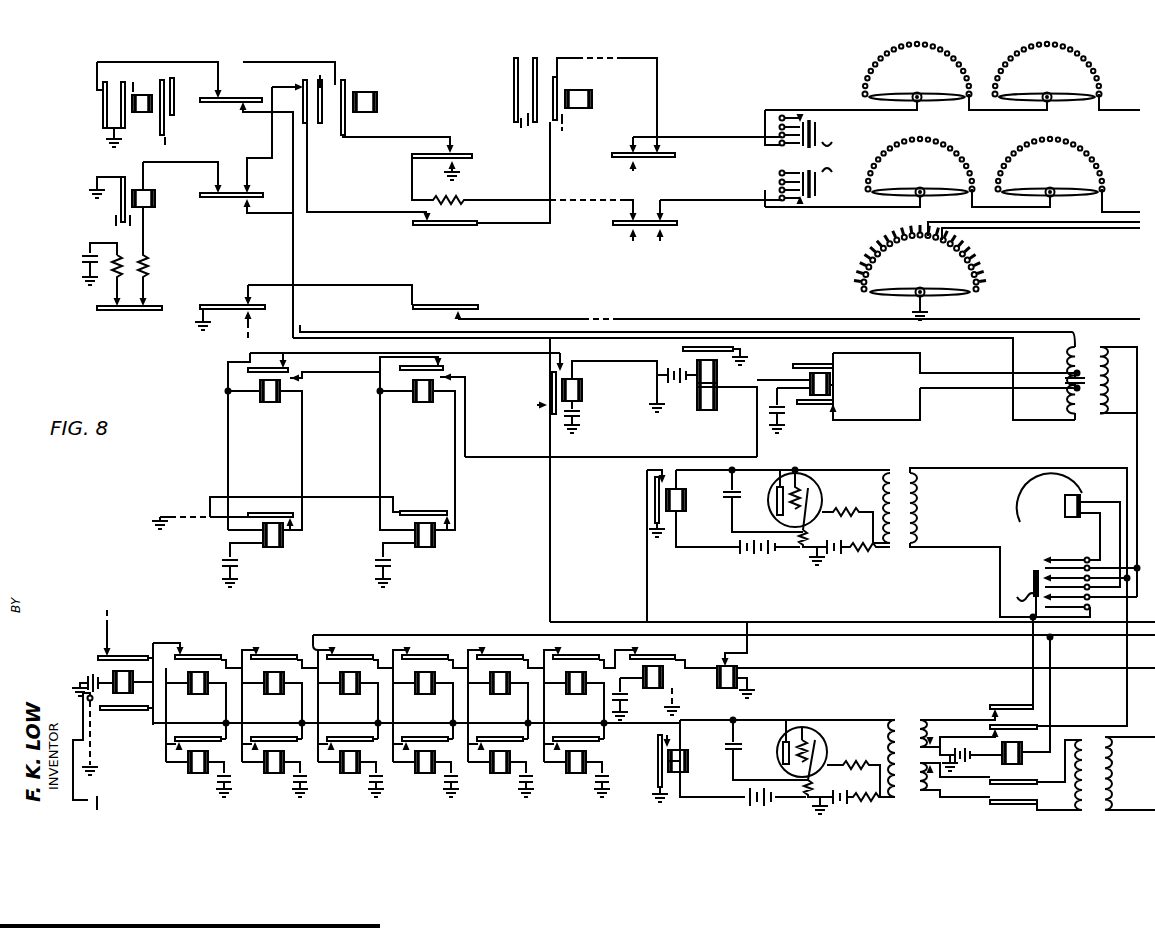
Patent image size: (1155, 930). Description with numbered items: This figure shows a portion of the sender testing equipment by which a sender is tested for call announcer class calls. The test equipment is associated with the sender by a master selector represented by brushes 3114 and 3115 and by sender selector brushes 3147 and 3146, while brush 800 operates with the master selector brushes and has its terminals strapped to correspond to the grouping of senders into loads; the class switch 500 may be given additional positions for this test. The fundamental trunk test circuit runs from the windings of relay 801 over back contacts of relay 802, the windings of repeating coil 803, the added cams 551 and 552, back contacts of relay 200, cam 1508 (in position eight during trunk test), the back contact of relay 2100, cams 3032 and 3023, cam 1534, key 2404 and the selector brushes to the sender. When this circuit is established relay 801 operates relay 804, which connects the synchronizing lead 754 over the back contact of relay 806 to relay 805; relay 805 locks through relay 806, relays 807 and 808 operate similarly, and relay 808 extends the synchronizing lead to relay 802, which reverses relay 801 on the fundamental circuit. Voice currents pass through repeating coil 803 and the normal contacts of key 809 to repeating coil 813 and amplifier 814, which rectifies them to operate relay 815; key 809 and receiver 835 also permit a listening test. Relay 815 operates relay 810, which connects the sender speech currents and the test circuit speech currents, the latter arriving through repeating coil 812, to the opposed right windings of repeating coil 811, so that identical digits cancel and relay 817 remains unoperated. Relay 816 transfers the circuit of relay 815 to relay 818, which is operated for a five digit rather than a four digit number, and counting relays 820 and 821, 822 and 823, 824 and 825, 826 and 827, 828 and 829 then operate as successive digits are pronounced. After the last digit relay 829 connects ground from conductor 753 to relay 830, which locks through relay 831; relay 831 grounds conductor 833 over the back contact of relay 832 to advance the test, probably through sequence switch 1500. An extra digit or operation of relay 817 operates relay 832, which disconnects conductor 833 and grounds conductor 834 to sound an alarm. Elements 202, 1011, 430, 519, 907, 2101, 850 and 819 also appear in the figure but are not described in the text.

The conductor 202 is at (190, 62).
The relay 1011 is at (139, 95).
The relay 200 is at (365, 97).
The cam 552 is at (235, 104).
The cam 551 is at (235, 203).
The relay 430 is at (142, 208).
The contact 519 is at (148, 303).
The class switch 500 is at (230, 312).
The cam 1534 is at (433, 157).
The resistor 907 is at (460, 204).
The cam 1508 is at (438, 226).
The sequence switch 1500 is at (432, 304).
The conductor 2101 is at (548, 174).
The relay 2100 is at (592, 99).
The cam 3032 is at (676, 158).
The cam 3023 is at (680, 228).
The key 2404 is at (798, 158).
The master selector brush 3114 is at (868, 76).
The sender selector brush 3147 is at (1054, 76).
The master selector brush 3115 is at (870, 172).
The sender selector brush 3146 is at (1056, 174).
The brush 800 is at (997, 271).
The relay 806 is at (272, 388).
The relay 805 is at (266, 549).
The relay 808 is at (425, 388).
The relay 807 is at (425, 549).
The relay group 850 is at (496, 576).
The synchronizing lead 754 is at (552, 579).
The relay 804 is at (582, 390).
The relay 801 is at (705, 412).
The relay 802 is at (818, 400).
The repeating coil 803 is at (1080, 416).
The relay 815 is at (678, 511).
The amplifier 814 is at (815, 500).
The repeating coil 813 is at (900, 548).
The receiver 835 is at (1067, 518).
The key 809 is at (1027, 592).
The conductor 833 is at (117, 633).
The relay 832 is at (124, 693).
The conductor 834 is at (92, 803).
The relay 831 is at (199, 694).
The relay 830 is at (196, 775).
The counting relay 829 is at (275, 694).
The counting relay 828 is at (272, 775).
The counting relay 827 is at (351, 694).
The counting relay 826 is at (348, 775).
The counting relay 825 is at (426, 694).
The counting relay 824 is at (423, 775).
The counting relay 823 is at (501, 694).
The counting relay 822 is at (498, 775).
The relay 821 is at (577, 694).
The counting relay 820 is at (574, 775).
The conductor 753 is at (487, 633).
The relay 818 is at (663, 678).
The relay 816 is at (722, 689).
The relay 817 is at (690, 763).
The vacuum tube 819 is at (820, 749).
The repeating coil 811 is at (905, 718).
The relay 810 is at (1022, 757).
The repeating coil 812 is at (1095, 738).